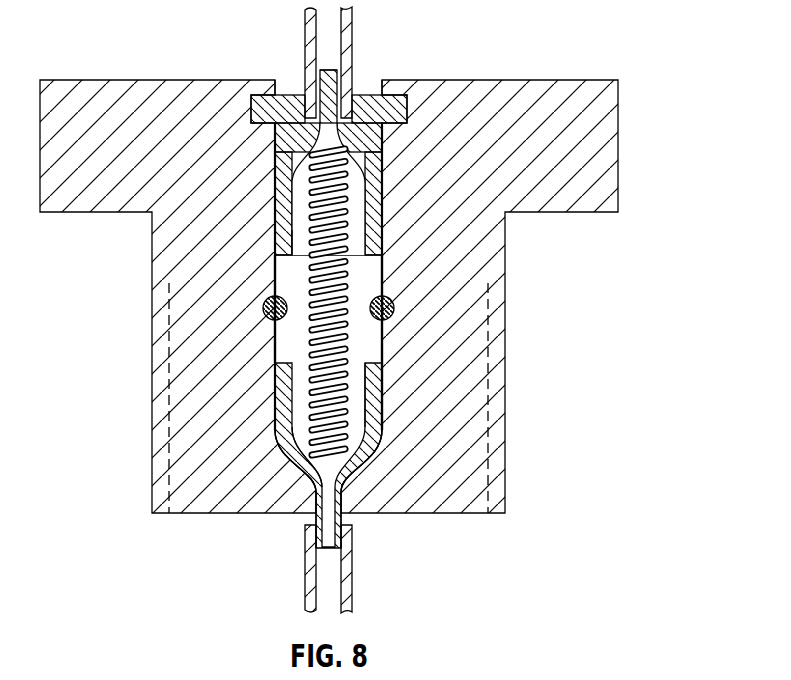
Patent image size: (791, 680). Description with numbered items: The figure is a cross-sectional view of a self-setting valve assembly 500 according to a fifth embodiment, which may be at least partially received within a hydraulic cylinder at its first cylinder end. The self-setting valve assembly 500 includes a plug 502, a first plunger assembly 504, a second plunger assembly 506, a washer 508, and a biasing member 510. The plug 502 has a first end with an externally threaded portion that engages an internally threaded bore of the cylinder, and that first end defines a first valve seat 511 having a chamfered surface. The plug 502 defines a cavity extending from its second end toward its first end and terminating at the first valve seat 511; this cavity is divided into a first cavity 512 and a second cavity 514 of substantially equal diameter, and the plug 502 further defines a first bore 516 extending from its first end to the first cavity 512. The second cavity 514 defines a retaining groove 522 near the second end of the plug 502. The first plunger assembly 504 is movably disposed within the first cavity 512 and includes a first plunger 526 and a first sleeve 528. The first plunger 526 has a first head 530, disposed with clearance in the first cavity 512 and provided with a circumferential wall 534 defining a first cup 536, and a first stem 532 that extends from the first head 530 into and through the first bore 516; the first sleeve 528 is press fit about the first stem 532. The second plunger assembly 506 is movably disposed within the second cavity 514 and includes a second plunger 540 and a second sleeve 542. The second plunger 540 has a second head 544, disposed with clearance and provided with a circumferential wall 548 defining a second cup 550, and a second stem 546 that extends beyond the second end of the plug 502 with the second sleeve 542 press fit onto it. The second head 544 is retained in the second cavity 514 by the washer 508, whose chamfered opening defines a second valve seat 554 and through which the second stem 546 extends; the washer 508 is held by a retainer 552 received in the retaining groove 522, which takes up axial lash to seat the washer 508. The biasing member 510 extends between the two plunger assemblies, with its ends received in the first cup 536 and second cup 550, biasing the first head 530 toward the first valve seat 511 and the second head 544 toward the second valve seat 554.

The self-setting valve assembly 500 is at (363, 307).
The plug 502 is at (494, 521).
The first plunger assembly 504 is at (324, 488).
The second plunger assembly 506 is at (331, 127).
The washer 508 is at (282, 142).
The biasing member 510 is at (338, 290).
The first valve seat 511 is at (360, 462).
The first cavity 512 is at (382, 381).
The second cavity 514 is at (383, 197).
The first bore 516 is at (343, 504).
The retaining groove 522 is at (408, 108).
The first plunger 526 is at (291, 460).
The first sleeve 528 is at (306, 580).
The first head 530 is at (278, 436).
The first stem 532 is at (325, 530).
The circumferential wall 534 is at (291, 402).
The first cup 536 is at (358, 398).
The second plunger 540 is at (387, 219).
The second sleeve 542 is at (352, 28).
The second head 544 is at (292, 172).
The second stem 546 is at (325, 92).
The circumferential wall 548 is at (287, 213).
The second cup 550 is at (292, 238).
The retainer 552 is at (384, 90).
The second valve seat 554 is at (383, 137).